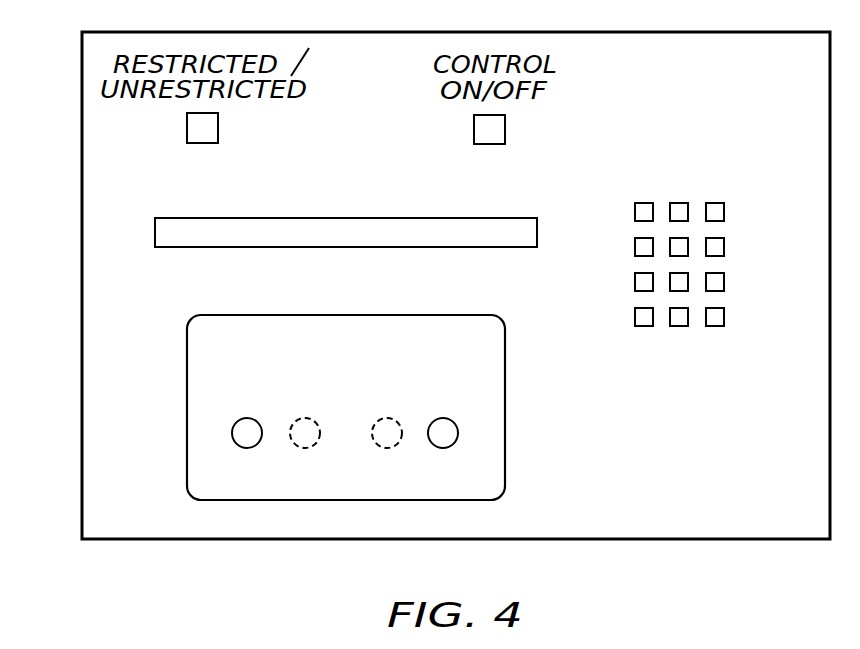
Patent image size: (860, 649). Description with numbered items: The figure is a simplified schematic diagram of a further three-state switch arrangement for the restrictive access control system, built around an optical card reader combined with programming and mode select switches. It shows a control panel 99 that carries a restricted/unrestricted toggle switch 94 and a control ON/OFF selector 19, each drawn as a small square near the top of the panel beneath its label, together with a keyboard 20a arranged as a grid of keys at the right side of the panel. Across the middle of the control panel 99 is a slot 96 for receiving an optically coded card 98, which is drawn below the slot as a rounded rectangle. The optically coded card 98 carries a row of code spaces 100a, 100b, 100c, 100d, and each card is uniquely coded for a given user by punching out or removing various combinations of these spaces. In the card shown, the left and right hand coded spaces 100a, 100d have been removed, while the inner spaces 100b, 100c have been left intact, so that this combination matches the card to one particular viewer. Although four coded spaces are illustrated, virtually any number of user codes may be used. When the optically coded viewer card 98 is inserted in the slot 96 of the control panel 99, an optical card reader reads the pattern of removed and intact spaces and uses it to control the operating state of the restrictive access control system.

The control panel 99 is at (72, 266).
The restricted/unrestricted toggle switch 94 is at (218, 127).
The control ON/OFF selector 19 is at (505, 128).
The slot 96 is at (305, 217).
The optically coded card 98 is at (392, 316).
The code space 100a is at (258, 419).
The code space 100b is at (309, 418).
The code space 100c is at (425, 366).
The code space 100d is at (488, 392).
The keyboard 20a is at (727, 192).